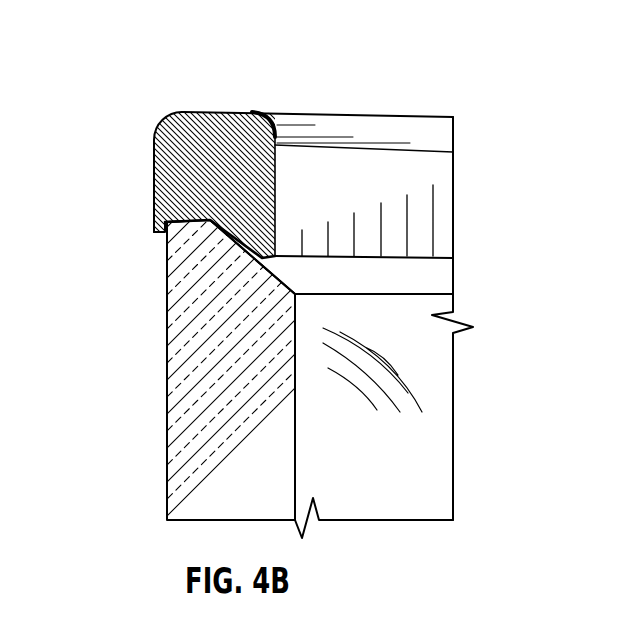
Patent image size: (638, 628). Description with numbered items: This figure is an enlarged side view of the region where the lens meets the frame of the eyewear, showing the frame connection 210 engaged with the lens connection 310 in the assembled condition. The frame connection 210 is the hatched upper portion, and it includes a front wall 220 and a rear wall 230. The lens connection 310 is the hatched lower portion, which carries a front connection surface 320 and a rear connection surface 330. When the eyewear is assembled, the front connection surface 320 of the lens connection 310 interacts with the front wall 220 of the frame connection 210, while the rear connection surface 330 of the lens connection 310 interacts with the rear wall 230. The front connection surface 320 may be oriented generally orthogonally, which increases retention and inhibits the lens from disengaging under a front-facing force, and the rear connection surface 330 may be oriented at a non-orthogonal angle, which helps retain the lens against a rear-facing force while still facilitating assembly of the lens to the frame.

The frame connection 210 is at (170, 167).
The front wall 220 is at (160, 226).
The rear wall 230 is at (230, 228).
The lens connection 310 is at (183, 357).
The front connection surface 320 is at (177, 224).
The rear connection surface 330 is at (240, 253).